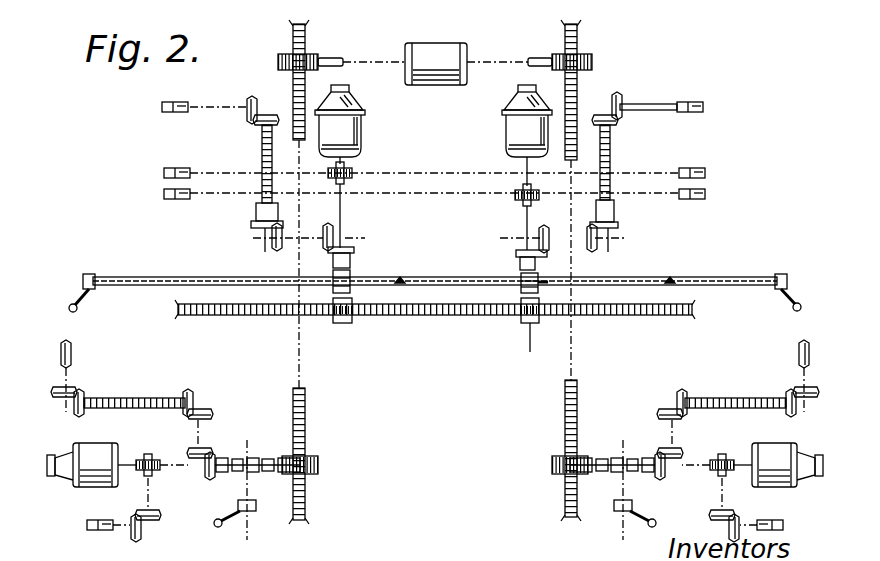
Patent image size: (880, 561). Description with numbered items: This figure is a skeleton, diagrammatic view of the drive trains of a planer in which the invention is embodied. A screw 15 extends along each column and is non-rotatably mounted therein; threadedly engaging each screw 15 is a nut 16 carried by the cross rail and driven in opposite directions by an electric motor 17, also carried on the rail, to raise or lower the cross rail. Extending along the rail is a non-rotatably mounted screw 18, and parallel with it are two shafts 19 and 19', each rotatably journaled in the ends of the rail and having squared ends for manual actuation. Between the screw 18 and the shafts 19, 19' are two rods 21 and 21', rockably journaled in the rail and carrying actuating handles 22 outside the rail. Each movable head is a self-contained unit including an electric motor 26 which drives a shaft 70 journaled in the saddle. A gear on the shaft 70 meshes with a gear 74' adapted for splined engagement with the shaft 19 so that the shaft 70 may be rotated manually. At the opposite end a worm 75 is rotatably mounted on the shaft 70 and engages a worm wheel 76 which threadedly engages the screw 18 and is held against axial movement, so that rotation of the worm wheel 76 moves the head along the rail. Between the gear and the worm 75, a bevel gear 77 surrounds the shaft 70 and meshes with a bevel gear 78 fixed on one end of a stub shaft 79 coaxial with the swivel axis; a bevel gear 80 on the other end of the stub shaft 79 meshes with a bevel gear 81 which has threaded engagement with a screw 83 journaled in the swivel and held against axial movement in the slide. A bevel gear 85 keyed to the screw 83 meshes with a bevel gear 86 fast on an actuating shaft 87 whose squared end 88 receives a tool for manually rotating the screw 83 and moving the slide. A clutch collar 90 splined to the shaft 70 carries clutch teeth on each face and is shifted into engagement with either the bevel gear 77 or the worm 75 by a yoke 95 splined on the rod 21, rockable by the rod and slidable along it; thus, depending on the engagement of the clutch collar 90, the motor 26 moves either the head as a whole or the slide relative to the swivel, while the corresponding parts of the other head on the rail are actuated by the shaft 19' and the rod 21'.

The screw 15 is at (306, 420).
The nut 16 is at (320, 55).
The electric motor 17 is at (428, 45).
The screw 18 is at (471, 318).
The shaft 19 is at (436, 211).
The shaft 19' is at (438, 140).
The rod 21 is at (435, 265).
The rod 21' is at (543, 260).
The actuating handle 22 is at (789, 301).
The electric motor 26 is at (366, 135).
The shaft 70 is at (526, 229).
The gear 74' is at (506, 202).
The worm 75 is at (531, 328).
The worm wheel 76 is at (521, 325).
The bevel gear 77 is at (516, 253).
The bevel gear 78 is at (546, 258).
The stub shaft 79 is at (584, 250).
The bevel gear 80 is at (606, 250).
The bevel gear 81 is at (616, 226).
The screw 83 is at (612, 162).
The bevel gear 85 is at (600, 113).
The bevel gear 86 is at (621, 95).
The actuating shaft 87 is at (657, 104).
The squared end 88 is at (703, 103).
The clutch collar 90 is at (547, 286).
The yoke 95 is at (521, 284).